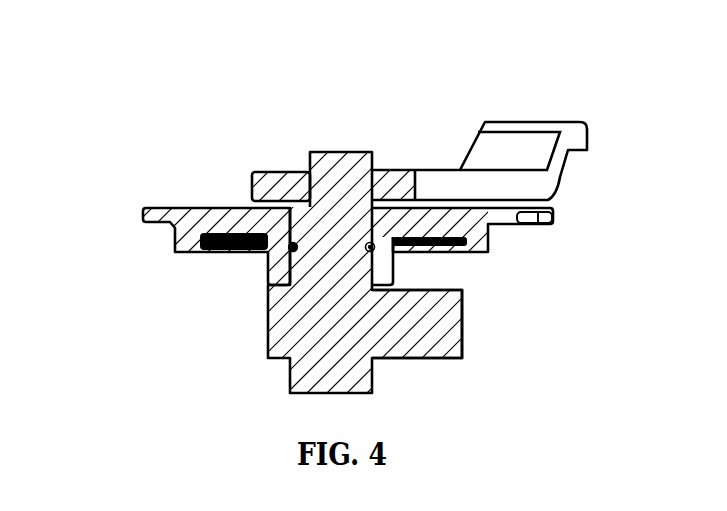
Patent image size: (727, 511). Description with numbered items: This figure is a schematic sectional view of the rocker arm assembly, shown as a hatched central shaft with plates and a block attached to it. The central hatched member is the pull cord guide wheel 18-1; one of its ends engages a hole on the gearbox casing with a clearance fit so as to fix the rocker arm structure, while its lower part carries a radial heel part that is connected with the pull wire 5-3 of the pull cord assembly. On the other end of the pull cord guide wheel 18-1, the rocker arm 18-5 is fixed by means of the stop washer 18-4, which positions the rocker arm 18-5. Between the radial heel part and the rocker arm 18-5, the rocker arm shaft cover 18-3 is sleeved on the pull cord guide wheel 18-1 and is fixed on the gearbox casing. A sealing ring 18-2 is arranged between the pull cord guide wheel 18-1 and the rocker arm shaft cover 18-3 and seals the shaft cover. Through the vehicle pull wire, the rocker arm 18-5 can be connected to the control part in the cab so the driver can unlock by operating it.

The pull cord guide wheel 18-1 is at (308, 328).
The sealing ring 18-2 is at (290, 248).
The rocker arm shaft cover 18-3 is at (208, 219).
The stop washer 18-4 is at (285, 171).
The rocker arm 18-5 is at (448, 182).
The pull wire 5-3 is at (455, 322).